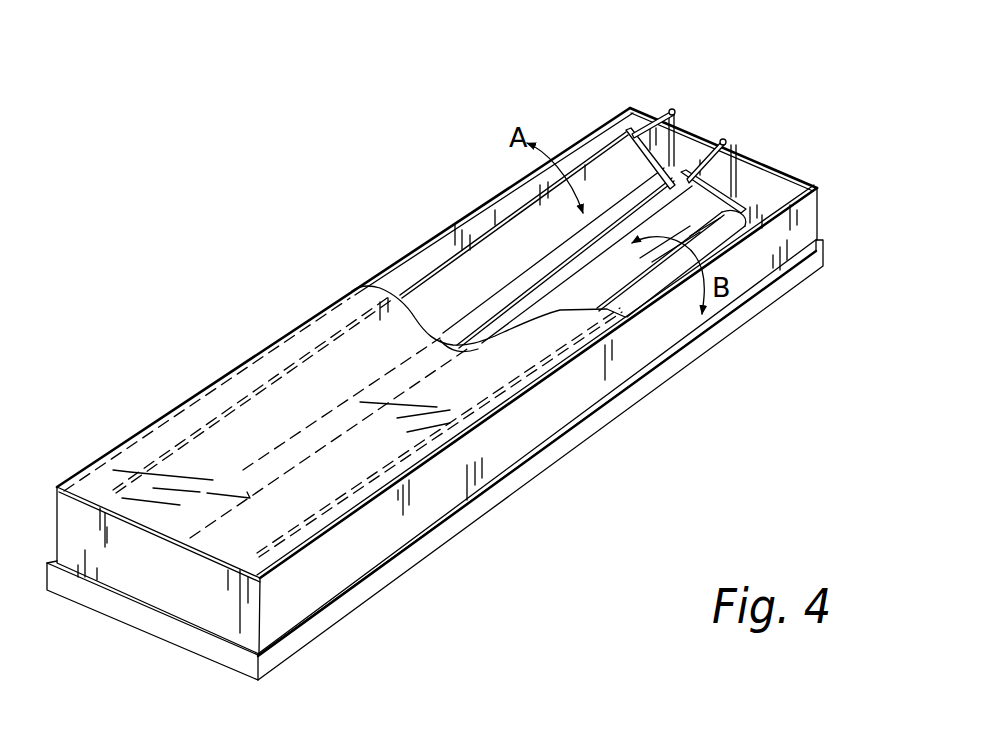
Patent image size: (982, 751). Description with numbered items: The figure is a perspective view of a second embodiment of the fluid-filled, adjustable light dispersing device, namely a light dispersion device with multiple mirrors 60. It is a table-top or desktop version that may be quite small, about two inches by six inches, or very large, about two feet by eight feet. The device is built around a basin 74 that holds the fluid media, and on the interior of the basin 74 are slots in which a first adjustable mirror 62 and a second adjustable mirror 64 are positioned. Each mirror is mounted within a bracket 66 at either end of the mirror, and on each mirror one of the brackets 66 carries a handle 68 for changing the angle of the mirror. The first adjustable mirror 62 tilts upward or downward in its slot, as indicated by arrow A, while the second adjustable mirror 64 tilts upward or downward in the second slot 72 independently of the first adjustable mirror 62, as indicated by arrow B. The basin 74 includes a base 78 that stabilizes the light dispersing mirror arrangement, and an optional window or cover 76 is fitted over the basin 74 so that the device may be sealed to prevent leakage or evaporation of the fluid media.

The light dispersion device with multiple mirrors 60 is at (205, 148).
The first adjustable mirror 62 is at (592, 128).
The second adjustable mirror 64 is at (797, 204).
The bracket 66 is at (680, 117).
The handle 68 is at (650, 110).
The second slot 72 is at (728, 133).
The basin 74 is at (470, 213).
The window or cover 76 is at (210, 386).
The base 78 is at (483, 515).